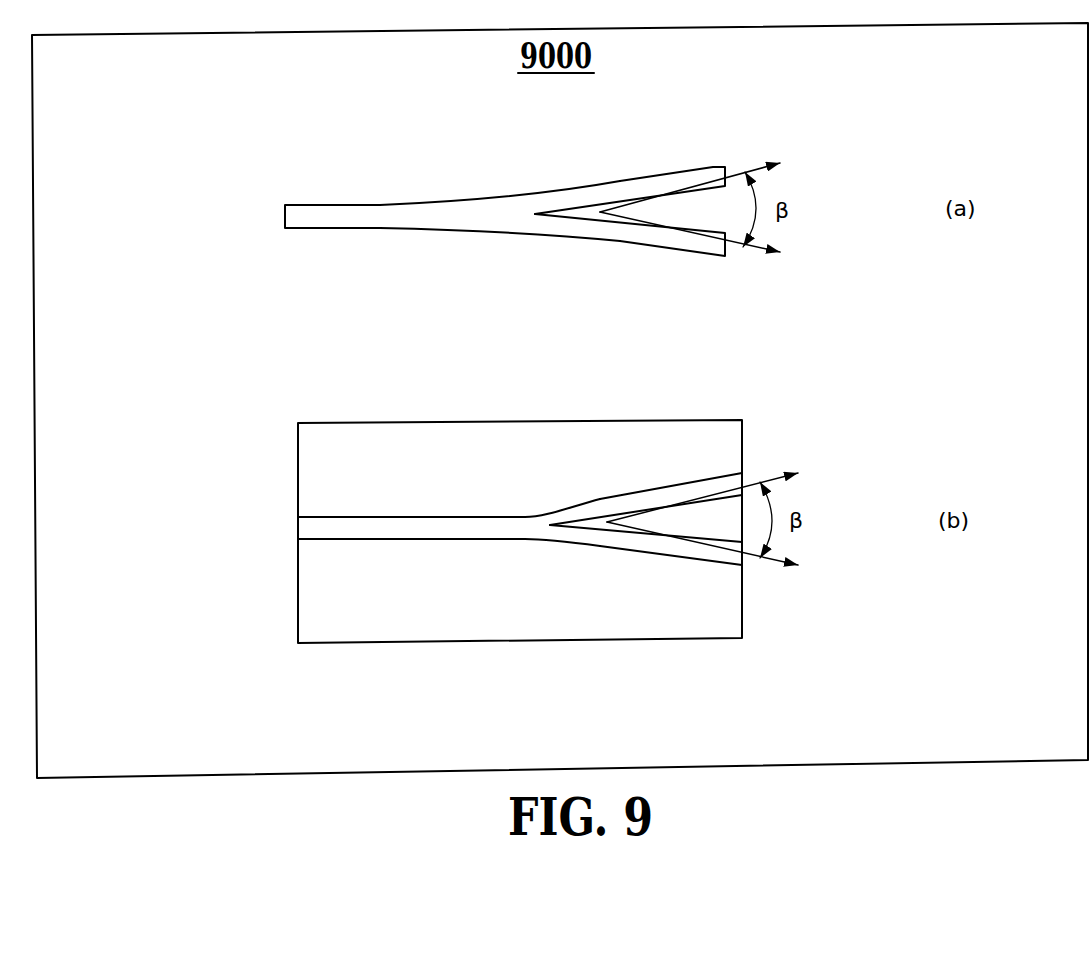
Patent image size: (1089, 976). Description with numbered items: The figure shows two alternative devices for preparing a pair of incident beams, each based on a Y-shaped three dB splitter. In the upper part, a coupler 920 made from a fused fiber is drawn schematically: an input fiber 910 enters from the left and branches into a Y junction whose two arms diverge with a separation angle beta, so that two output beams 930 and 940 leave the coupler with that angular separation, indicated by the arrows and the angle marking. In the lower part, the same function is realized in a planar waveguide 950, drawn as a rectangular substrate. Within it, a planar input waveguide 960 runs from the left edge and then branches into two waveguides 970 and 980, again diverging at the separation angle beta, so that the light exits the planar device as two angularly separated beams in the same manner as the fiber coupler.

The input fiber 910 is at (323, 220).
The coupler 920 is at (518, 215).
The output beam 930 is at (718, 168).
The output beam 940 is at (683, 240).
The planar waveguide 950 is at (388, 463).
The planar input waveguide 960 is at (357, 532).
The waveguide 970 is at (713, 485).
The waveguide 980 is at (693, 547).